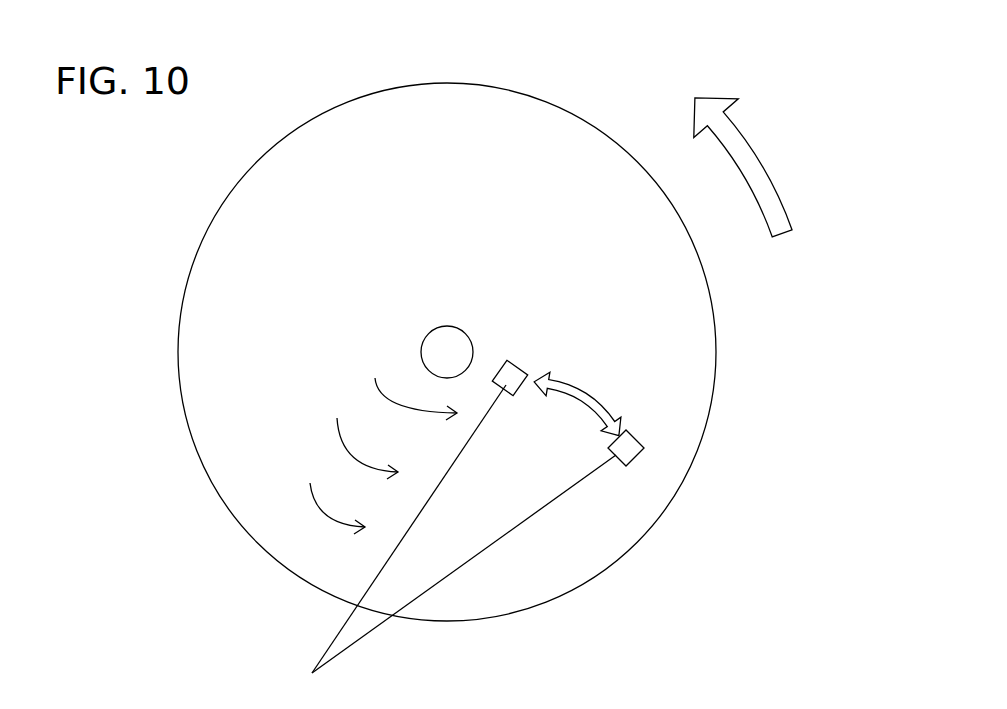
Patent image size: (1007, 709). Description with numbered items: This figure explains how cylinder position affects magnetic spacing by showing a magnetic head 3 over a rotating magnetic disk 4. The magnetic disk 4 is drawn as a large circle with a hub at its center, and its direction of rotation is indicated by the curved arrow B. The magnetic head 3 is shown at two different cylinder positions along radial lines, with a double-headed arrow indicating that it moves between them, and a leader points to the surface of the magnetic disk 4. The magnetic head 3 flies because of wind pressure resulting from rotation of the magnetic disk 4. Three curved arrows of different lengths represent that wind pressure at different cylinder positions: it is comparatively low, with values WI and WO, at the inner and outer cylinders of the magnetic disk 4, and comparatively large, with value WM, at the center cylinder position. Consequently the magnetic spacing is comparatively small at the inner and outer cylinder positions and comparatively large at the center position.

The magnetic head 3 is at (509, 370).
The magnetic disk 4 is at (690, 362).
The rotation direction of disk B is at (757, 167).
The wind pressure at inner cylinder WI is at (409, 385).
The wind pressure at center cylinder WM is at (371, 448).
The wind pressure at outer cylinder WO is at (340, 505).